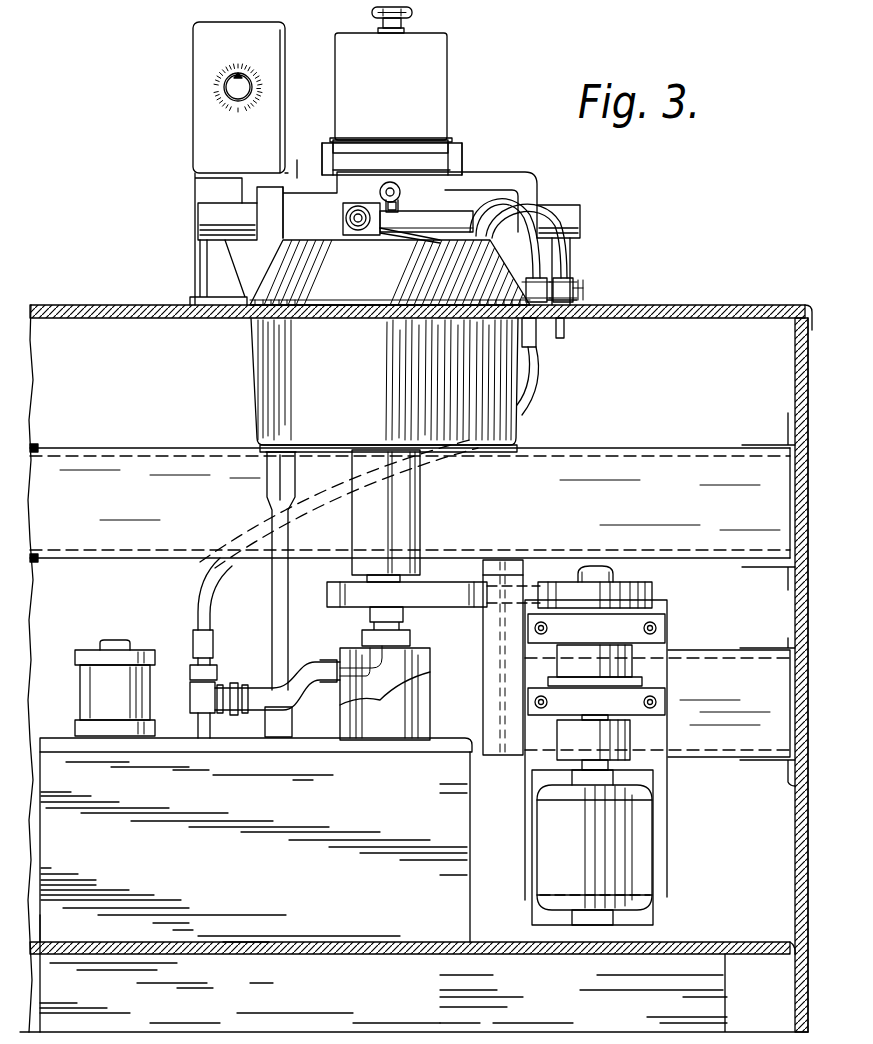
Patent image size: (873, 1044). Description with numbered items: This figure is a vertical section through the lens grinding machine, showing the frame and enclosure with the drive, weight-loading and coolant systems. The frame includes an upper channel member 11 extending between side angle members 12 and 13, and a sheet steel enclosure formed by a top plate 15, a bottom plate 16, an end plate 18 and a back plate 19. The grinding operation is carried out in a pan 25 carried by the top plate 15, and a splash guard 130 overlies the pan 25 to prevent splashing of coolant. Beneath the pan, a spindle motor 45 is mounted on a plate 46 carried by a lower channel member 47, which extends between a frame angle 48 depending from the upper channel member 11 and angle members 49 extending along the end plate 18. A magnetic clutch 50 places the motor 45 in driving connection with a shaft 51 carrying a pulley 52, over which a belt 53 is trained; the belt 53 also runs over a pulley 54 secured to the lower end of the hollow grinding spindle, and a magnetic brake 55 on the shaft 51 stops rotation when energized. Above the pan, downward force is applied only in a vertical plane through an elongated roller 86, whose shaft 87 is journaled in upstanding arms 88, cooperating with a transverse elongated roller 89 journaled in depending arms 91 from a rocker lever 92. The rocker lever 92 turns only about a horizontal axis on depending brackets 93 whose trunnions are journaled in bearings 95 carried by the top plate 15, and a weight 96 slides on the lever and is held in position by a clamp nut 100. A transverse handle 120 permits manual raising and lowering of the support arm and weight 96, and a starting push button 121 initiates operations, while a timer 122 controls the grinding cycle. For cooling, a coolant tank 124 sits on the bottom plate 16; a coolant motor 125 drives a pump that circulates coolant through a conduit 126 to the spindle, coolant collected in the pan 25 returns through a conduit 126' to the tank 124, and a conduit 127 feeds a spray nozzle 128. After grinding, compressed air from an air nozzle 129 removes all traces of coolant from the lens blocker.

The upper channel member 11 is at (643, 466).
The side angle member 12 is at (38, 447).
The side angle member 13 is at (786, 428).
The top plate 15 is at (702, 305).
The bottom plate 16 is at (688, 952).
The end plate 18 is at (795, 372).
The back plate 19 is at (208, 410).
The pan 25 is at (349, 370).
The spindle motor 45 is at (594, 851).
The plate 46 is at (662, 805).
The lower channel member 47 is at (693, 672).
The frame angle 48 is at (497, 632).
The angle members 49 is at (790, 646).
The magnetic clutch 50 is at (624, 748).
The shaft 51 is at (600, 566).
The pulley 52 is at (655, 590).
The belt 53 is at (453, 603).
The pulley 54 is at (428, 580).
The magnetic brake 55 is at (622, 675).
The elongated roller 86 is at (400, 190).
The shaft 87 is at (380, 191).
The upstanding arms 88 is at (343, 207).
The elongated roller 89 is at (455, 150).
The depending arms 91 is at (325, 152).
The rocker lever 92 is at (420, 140).
The depending brackets 93 is at (297, 178).
The bearings 95 is at (200, 218).
The weight 96 is at (448, 90).
The clamp nut 100 is at (412, 12).
The handle 120 is at (446, 214).
The starting push button 121 is at (356, 235).
The timer 122 is at (187, 65).
The coolant tank 124 is at (233, 873).
The coolant motor 125 is at (92, 668).
The conduit 126 is at (339, 680).
The conduit 126' is at (266, 594).
The conduit 127 is at (207, 592).
The spray nozzle 128 is at (488, 207).
The air nozzle 129 is at (536, 208).
The splash guard 130 is at (363, 290).